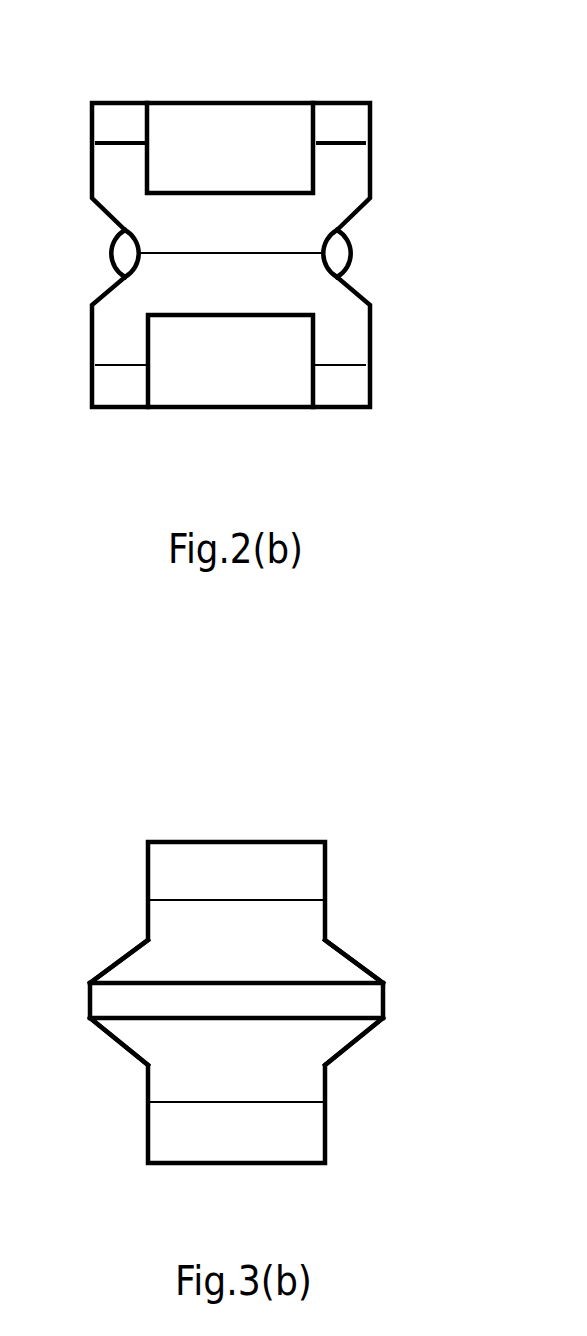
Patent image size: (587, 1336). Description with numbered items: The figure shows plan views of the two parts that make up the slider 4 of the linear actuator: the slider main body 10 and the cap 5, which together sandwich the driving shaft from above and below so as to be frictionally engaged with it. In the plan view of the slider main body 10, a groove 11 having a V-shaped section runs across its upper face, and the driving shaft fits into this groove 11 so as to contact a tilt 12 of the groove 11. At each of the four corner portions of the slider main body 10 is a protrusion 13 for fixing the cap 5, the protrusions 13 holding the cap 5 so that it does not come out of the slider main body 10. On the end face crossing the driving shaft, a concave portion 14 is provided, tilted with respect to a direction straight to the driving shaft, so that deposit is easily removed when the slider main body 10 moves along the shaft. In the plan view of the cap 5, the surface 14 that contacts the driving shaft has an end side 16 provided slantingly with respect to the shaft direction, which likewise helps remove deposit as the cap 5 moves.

In FIG. 2B, the slider 4 is at (392, 86).
In FIG. 3B, the cap 5 is at (352, 831).
In FIG. 2B, the slider main body 10 is at (347, 170).
In FIG. 2B, the groove 11 is at (195, 227).
In FIG. 2B, the tilt 12 is at (103, 177).
In FIG. 2B, the protrusion 13 is at (115, 112).
In FIG. 2B, the concave portion 14 is at (118, 258).
In FIG. 3B, the concave portion 14 is at (180, 930).
In FIG. 3B, the end side 16 is at (112, 965).